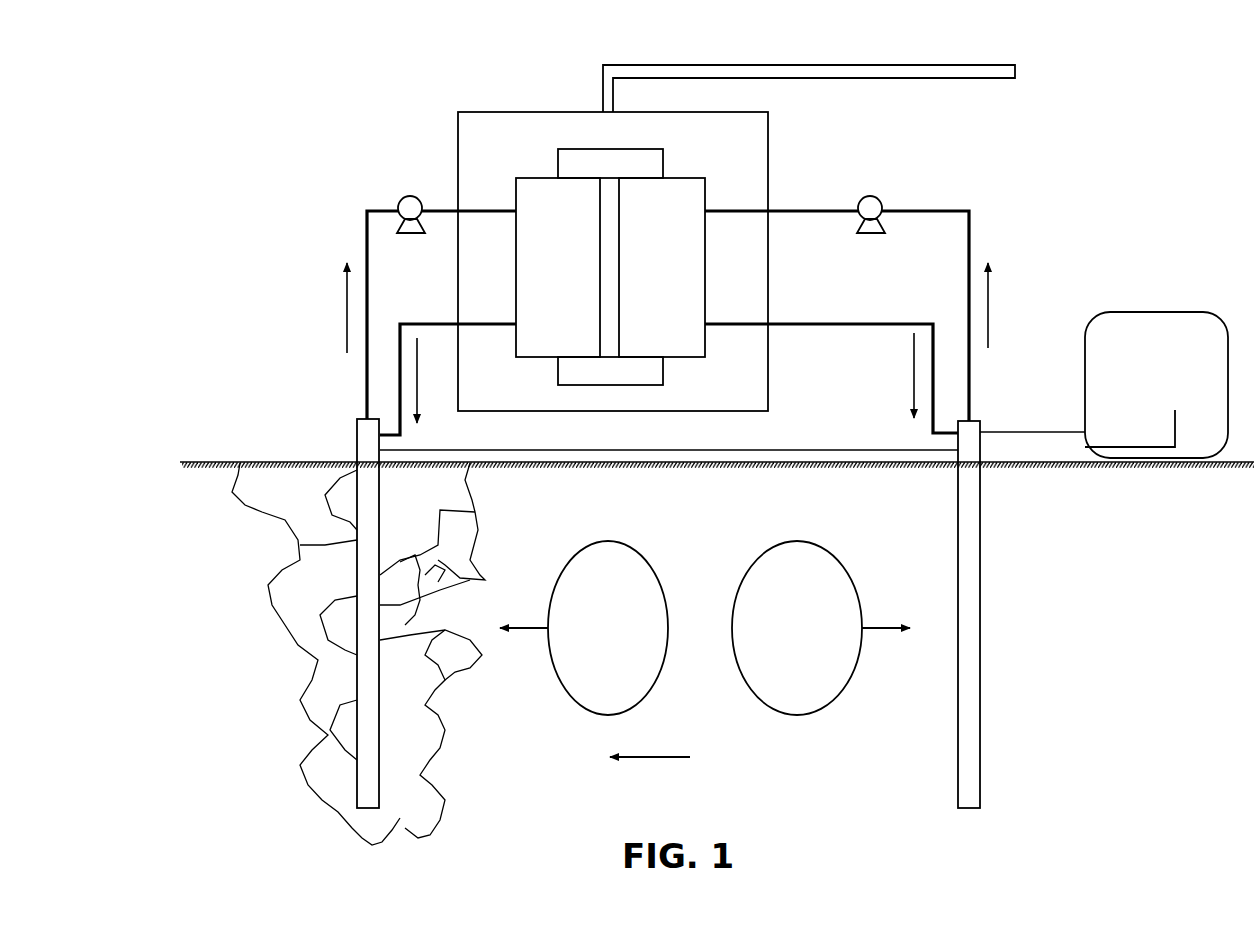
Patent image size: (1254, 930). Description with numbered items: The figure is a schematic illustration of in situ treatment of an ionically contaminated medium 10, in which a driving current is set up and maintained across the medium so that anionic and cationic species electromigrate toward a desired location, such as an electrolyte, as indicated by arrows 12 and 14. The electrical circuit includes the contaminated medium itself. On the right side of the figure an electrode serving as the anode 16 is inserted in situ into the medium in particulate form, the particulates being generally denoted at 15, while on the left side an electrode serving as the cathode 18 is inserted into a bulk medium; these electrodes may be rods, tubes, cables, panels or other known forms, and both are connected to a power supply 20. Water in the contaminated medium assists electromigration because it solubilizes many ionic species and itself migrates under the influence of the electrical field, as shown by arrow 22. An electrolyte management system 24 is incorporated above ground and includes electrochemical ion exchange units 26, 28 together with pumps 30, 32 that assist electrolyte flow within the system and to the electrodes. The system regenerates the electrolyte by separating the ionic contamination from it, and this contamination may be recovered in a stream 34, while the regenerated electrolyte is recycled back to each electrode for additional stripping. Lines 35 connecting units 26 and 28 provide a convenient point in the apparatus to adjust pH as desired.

The ionically contaminated medium 10 is at (223, 482).
The arrow indicating electromigration of ionic species 12 is at (542, 632).
The arrow indicating electromigration of ionic species 14 is at (870, 632).
The particulates 15 is at (290, 578).
The anode 16 is at (979, 422).
The cathode 18 is at (356, 437).
The power supply 20 is at (1140, 312).
The arrow indicating water migration 22 is at (645, 760).
The electrolyte management system 24 is at (492, 112).
The electrochemical ion exchange unit 26 is at (572, 274).
The electrochemical ion exchange unit 28 is at (676, 272).
The pump 30 is at (405, 196).
The pump 32 is at (868, 196).
The stream 34 is at (742, 65).
The lines connecting ion exchange units 35 is at (650, 150).